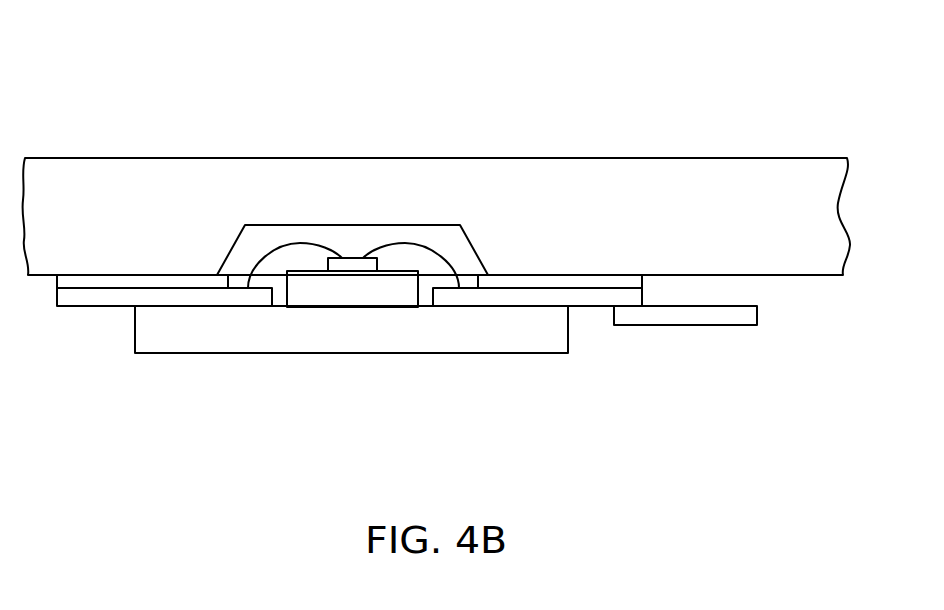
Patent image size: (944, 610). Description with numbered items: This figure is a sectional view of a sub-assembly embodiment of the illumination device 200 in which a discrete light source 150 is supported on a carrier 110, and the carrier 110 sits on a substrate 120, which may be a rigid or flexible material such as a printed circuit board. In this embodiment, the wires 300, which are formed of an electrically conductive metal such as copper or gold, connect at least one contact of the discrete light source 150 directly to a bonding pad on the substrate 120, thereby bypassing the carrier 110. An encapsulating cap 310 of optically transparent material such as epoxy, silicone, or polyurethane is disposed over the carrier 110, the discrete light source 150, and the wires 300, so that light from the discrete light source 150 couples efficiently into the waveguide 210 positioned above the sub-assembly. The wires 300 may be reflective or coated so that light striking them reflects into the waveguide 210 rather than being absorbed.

The light emitting device package 200 is at (138, 82).
The waveguide 210 is at (788, 178).
The substrate 120 is at (100, 297).
The carrier 110 is at (332, 287).
The discrete light source 150 is at (353, 266).
The wire 300 is at (283, 247).
The encapsulating cap 310 is at (448, 247).